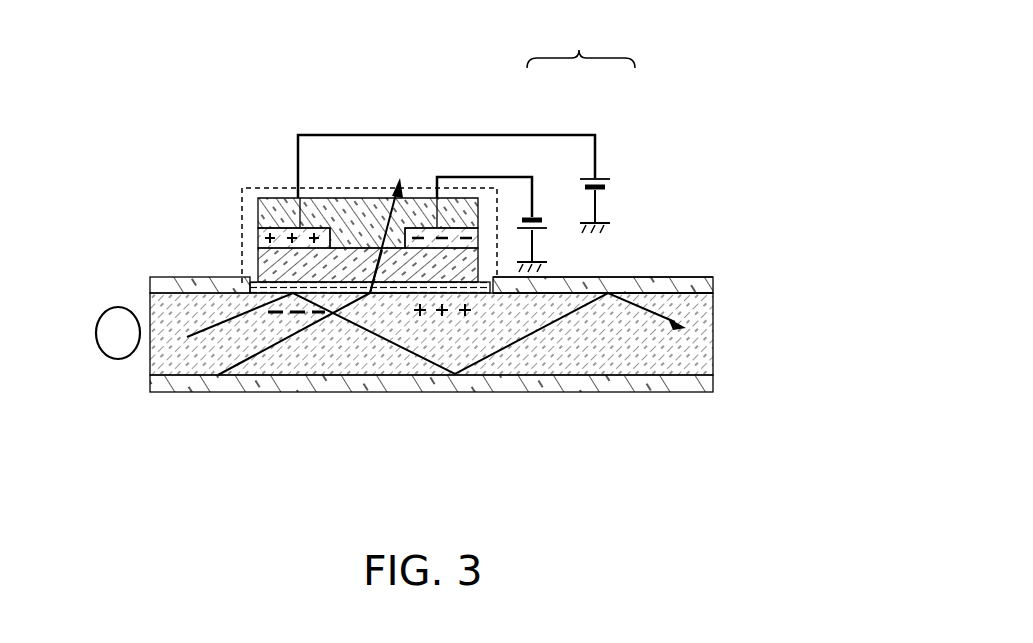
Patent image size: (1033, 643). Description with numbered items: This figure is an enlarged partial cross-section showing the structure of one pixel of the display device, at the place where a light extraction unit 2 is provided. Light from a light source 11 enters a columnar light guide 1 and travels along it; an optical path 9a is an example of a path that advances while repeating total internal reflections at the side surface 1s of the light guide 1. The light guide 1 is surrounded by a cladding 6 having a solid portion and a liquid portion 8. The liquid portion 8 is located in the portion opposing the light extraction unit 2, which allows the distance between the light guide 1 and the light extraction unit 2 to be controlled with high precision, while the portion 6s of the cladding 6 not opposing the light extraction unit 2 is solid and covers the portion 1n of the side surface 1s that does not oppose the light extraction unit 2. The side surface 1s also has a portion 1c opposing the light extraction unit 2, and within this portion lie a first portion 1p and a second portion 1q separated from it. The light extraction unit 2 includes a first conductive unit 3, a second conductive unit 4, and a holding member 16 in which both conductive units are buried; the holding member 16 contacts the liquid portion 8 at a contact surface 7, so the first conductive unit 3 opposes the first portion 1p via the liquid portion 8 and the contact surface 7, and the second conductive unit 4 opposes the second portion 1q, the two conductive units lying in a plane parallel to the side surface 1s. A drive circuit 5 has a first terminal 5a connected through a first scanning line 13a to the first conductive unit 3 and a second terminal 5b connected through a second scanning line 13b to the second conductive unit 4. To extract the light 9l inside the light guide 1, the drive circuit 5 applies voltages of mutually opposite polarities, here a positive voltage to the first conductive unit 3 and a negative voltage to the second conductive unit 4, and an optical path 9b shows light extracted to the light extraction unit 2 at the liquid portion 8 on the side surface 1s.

The light guide 1 is at (688, 347).
The side surface 1s is at (540, 292).
The portion not opposing the light extraction unit 1n is at (680, 296).
The first portion 1p is at (317, 293).
The second portion 1q is at (443, 293).
The portion opposing the light extraction unit 1c is at (380, 290).
The light extraction unit 2 is at (262, 188).
The first conductive unit 3 is at (268, 233).
The second conductive unit 4 is at (420, 230).
The drive circuit 5 is at (576, 143).
The first terminal 5a is at (607, 177).
The second terminal 5b is at (543, 217).
The cladding 6 is at (690, 382).
The solid portion of the cladding 6s is at (688, 282).
The contact surface 7 is at (278, 267).
The liquid portion 8 is at (273, 287).
The optical path 9a is at (515, 338).
The optical path 9b is at (382, 212).
The light 9l is at (413, 293).
The light source 11 is at (118, 338).
The first scanning line 13a is at (437, 135).
The second scanning line 13b is at (480, 177).
The holding member 16 is at (272, 215).